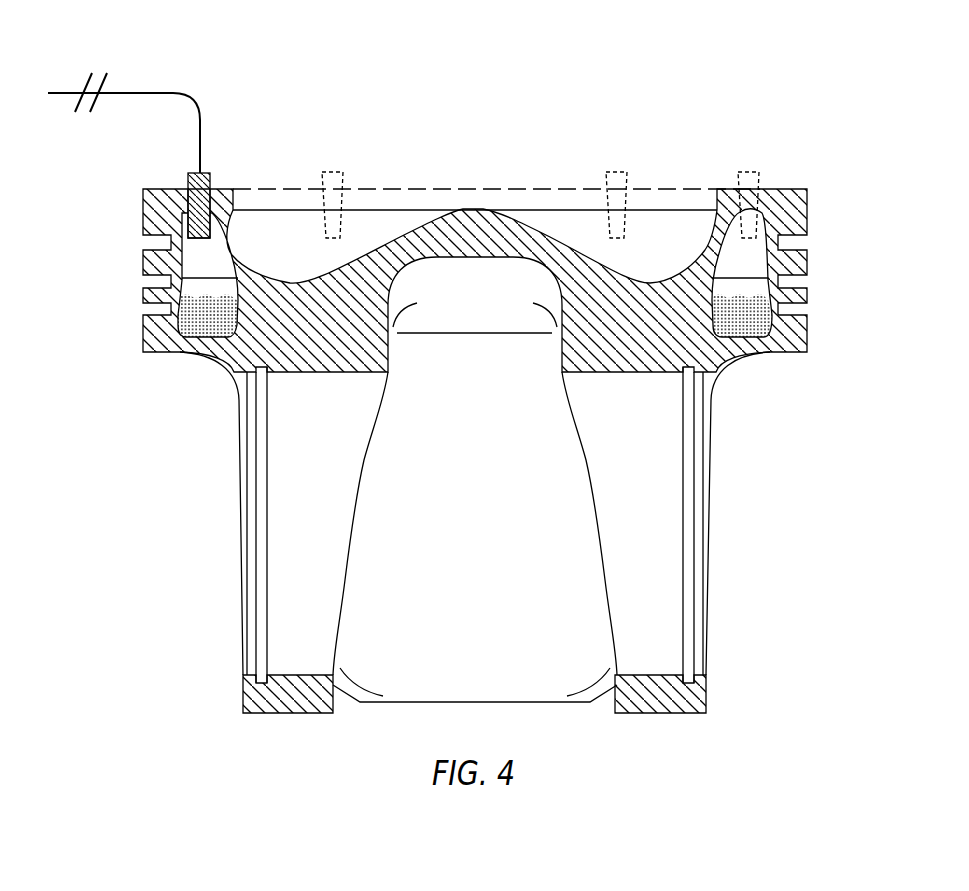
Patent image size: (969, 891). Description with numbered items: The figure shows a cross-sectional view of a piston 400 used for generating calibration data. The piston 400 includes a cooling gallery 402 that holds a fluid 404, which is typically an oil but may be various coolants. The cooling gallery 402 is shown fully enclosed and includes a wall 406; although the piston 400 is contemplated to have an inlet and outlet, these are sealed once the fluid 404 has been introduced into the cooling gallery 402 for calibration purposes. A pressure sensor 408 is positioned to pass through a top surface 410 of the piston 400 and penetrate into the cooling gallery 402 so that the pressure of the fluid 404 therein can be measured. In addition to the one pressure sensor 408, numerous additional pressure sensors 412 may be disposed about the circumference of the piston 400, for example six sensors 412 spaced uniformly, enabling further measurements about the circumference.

The piston 400 is at (749, 94).
The cooling gallery 402 is at (755, 267).
The fluid 404 is at (758, 328).
The wall 406 is at (738, 358).
The pressure sensor 408 is at (203, 172).
The top surface 410 is at (222, 188).
The additional pressure sensors 412 is at (748, 172).